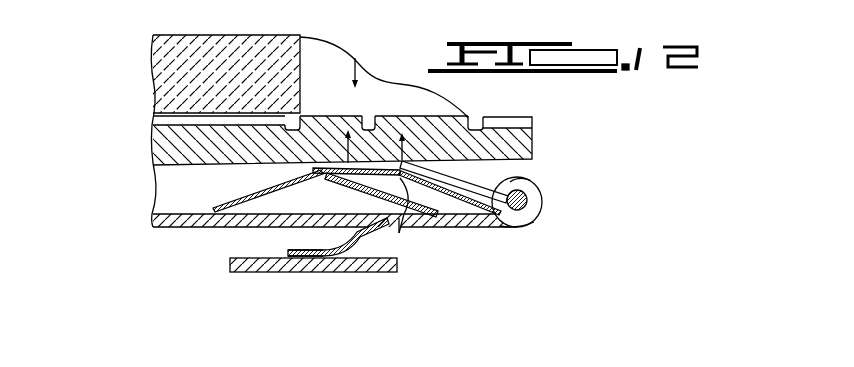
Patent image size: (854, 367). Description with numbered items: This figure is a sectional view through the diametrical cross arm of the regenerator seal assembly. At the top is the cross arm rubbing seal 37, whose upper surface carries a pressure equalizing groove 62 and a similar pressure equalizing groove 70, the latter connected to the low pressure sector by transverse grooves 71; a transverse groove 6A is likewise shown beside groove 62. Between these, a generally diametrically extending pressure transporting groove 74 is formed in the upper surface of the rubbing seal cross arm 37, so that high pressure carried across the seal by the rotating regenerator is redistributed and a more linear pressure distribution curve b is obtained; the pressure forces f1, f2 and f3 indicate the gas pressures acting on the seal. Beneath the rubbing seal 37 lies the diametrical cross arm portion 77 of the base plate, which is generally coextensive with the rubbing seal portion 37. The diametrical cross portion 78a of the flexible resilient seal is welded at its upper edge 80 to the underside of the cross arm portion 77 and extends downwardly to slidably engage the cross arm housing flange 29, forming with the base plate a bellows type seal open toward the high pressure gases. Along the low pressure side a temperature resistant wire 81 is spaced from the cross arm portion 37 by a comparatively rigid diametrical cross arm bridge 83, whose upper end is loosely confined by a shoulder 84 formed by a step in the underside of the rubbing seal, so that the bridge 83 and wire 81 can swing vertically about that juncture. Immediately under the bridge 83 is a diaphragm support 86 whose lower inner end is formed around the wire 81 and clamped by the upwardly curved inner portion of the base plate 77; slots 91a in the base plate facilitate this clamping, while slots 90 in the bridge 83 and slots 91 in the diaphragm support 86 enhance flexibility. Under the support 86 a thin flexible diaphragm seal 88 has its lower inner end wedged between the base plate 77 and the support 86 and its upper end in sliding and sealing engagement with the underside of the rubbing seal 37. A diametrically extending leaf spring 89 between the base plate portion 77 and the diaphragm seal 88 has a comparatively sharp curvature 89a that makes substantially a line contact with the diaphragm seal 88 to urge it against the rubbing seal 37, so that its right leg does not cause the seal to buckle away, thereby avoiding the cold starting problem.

The gap passage 6A is at (157, 122).
The cross arm rubbing seal 37 is at (532, 140).
The pressure equalizing groove 62 is at (299, 113).
The pressure transporting groove 74 is at (374, 114).
The pressure equalizing groove 70 is at (478, 117).
The transverse grooves 71 is at (525, 118).
The pressure distribution curve b is at (350, 55).
The flow arrow f1 is at (407, 138).
The flow arrow f2 is at (345, 149).
The pressure force f3 is at (353, 68).
The cross arm portion of base plate 77 is at (488, 228).
The cross arm bridge 83 is at (510, 178).
The temperature resistant wire 81 is at (530, 194).
The diaphragm support 86 is at (498, 234).
The slots 91a is at (535, 190).
The leaf spring 89 is at (265, 190).
The shoulder 84 is at (393, 167).
The sharp curvature 89a is at (327, 180).
The diaphragm seal 88 is at (462, 225).
The slots 90 is at (455, 182).
The slots 91 is at (400, 228).
The upper edge weld 80 is at (378, 230).
The diametrical cross portion of seal 78a is at (332, 252).
The cross arm housing flange 29 is at (335, 270).